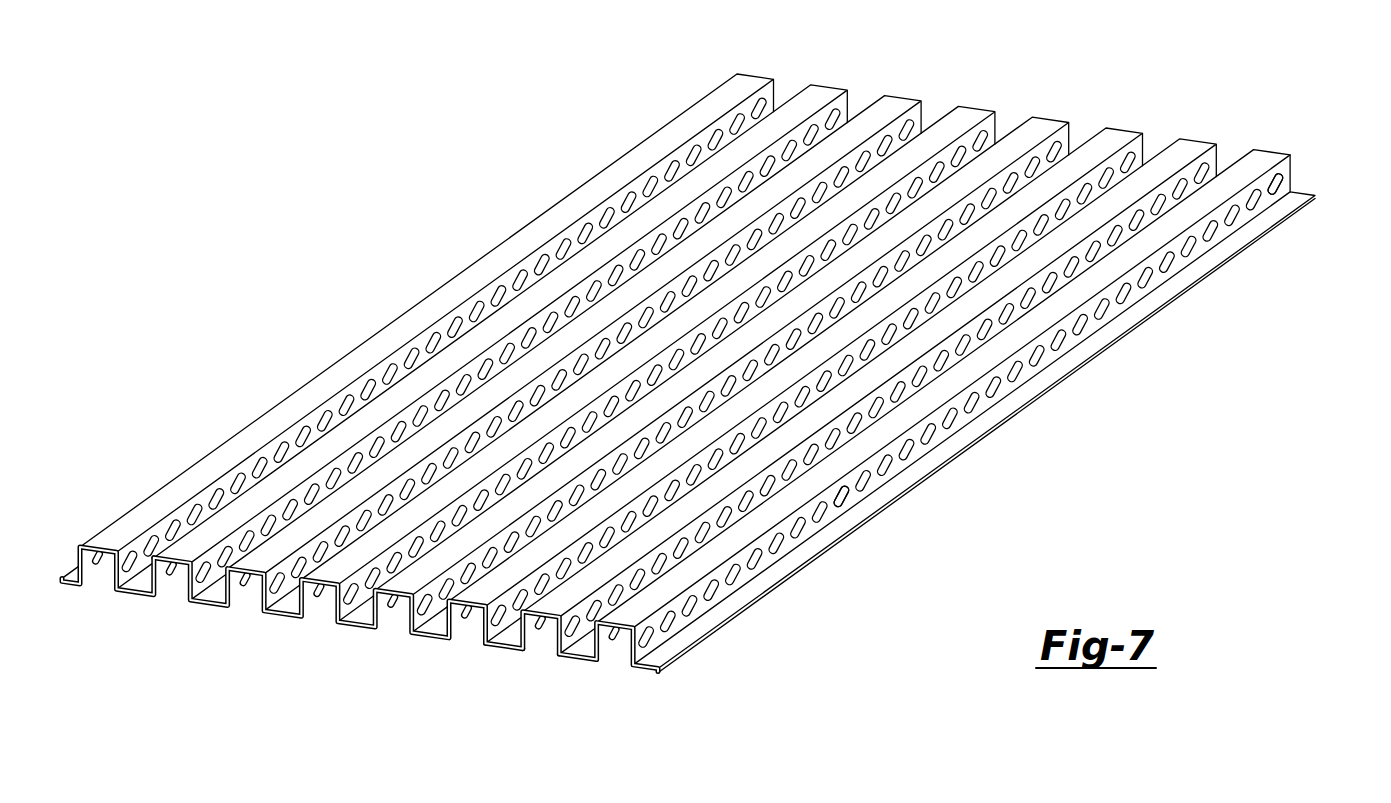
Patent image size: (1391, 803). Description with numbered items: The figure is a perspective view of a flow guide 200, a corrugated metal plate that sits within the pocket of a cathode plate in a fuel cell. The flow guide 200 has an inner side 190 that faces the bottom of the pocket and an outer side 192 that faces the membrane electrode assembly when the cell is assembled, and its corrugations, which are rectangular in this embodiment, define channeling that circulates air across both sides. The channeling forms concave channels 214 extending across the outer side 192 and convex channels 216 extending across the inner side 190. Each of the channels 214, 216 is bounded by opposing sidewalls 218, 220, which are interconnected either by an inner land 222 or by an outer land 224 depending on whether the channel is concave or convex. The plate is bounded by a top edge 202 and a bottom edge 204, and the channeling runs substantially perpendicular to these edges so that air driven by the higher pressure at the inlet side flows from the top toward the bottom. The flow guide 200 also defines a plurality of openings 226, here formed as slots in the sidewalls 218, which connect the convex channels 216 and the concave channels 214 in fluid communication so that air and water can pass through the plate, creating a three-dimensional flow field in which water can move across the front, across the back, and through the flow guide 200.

The inner side 190 is at (318, 645).
The outer side 192 is at (920, 73).
The flow guide 200 is at (848, 495).
The top edge 202 is at (1122, 128).
The bottom edge 204 is at (500, 648).
The concave channels 214 is at (146, 582).
The convex channels 216 is at (162, 565).
The sidewall 218 is at (560, 637).
The sidewall 220 is at (610, 646).
The inner land 222 is at (580, 645).
The outer land 224 is at (677, 585).
The openings 226 is at (1285, 182).